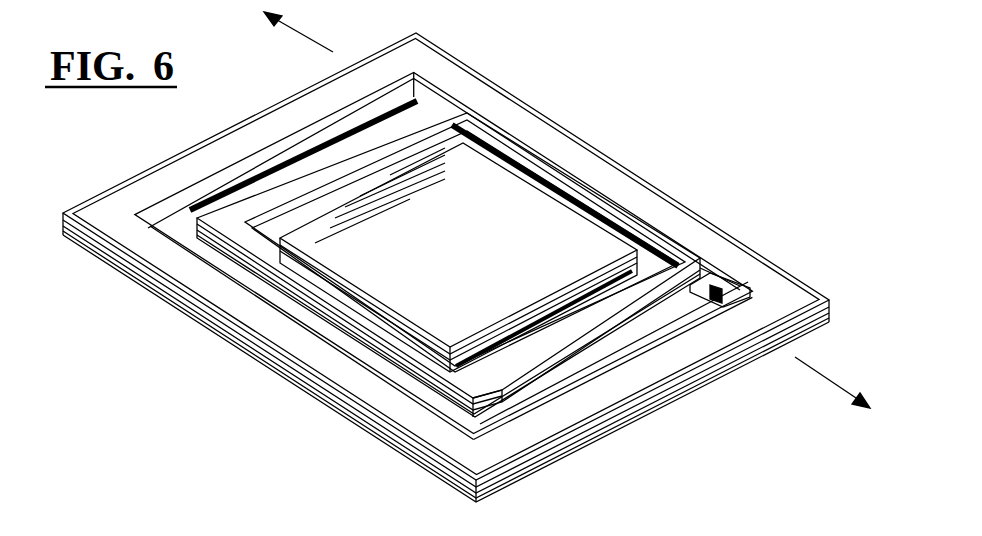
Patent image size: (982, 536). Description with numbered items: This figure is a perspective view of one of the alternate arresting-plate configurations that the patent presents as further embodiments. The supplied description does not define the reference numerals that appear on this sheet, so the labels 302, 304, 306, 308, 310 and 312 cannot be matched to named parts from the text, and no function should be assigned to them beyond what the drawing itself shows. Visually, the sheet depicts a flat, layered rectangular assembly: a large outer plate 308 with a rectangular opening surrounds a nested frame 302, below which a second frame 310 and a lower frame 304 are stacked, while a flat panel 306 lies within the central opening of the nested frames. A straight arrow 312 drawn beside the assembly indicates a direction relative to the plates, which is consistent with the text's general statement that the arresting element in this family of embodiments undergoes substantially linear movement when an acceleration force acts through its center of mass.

The frame 302 is at (265, 195).
The lower frame 304 is at (580, 330).
The display panel 306 is at (492, 252).
The housing plate 308 is at (455, 80).
The spacer frame 310 is at (340, 298).
The direction arrow 312 is at (833, 378).